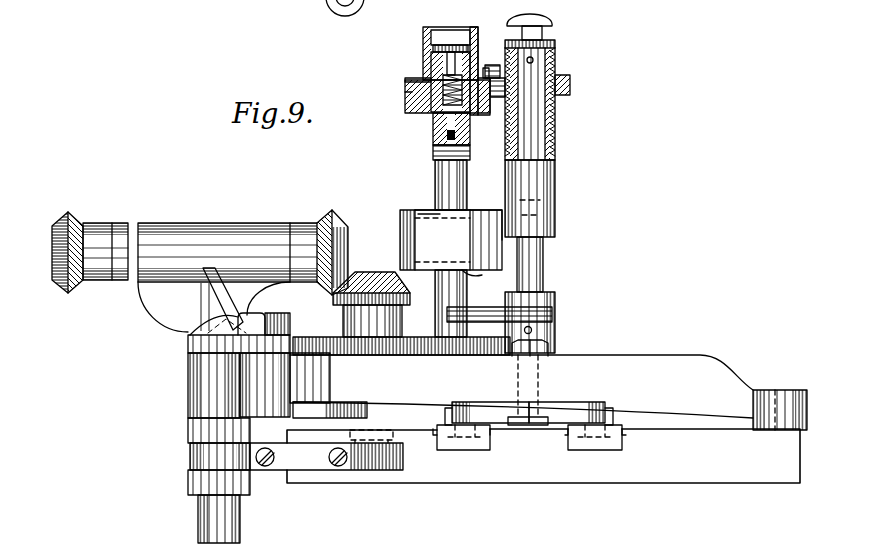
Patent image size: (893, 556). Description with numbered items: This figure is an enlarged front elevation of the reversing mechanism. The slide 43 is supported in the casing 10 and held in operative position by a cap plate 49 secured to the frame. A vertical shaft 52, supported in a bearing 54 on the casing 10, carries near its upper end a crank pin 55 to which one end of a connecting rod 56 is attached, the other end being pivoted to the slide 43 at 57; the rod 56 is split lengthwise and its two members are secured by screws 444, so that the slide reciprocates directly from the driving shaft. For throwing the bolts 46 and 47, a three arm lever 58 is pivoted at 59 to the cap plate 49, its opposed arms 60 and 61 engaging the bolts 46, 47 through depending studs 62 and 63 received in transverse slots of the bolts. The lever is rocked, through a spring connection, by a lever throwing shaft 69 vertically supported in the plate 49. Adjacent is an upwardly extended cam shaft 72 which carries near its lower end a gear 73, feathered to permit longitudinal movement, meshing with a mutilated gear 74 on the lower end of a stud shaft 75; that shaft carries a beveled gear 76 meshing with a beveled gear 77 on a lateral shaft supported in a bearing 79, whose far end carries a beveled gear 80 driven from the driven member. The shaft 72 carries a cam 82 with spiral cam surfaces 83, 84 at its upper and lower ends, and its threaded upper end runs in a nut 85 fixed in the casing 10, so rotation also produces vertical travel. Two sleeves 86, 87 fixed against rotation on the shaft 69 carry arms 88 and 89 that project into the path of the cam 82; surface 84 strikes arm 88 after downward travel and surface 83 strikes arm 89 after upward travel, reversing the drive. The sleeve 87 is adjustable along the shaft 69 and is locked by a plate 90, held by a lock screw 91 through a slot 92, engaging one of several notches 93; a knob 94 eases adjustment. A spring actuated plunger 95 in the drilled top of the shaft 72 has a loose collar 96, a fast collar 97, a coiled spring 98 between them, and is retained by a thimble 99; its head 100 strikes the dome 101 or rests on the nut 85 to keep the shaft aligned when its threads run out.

The casing 10 is at (571, 87).
The slide 43 is at (431, 472).
The bolt 46 is at (466, 441).
The bolt 47 is at (600, 441).
The cap plate 49 is at (688, 363).
The vertical shaft 52 is at (206, 515).
The bearing 54 is at (190, 386).
The crank pin 55 is at (206, 455).
The connecting rod 56 is at (276, 470).
The pivot 57 is at (379, 431).
The three arm lever 58 is at (530, 420).
The pivot 59 is at (550, 346).
The lever arm 60 is at (488, 408).
The lever arm 61 is at (580, 408).
The depending stud 62 is at (452, 420).
The depending stud 63 is at (606, 422).
The lever throwing shaft 69 is at (541, 265).
The cam shaft 72 is at (445, 172).
The gear 73 is at (478, 342).
The mutilated gear 74 is at (352, 348).
The stud shaft 75 is at (342, 322).
The beveled gear 76 is at (376, 278).
The beveled gear 77 is at (338, 227).
The bearing 79 is at (235, 245).
The beveled gear 80 is at (57, 226).
The cam 82 is at (412, 229).
The spiral cam surface 83 is at (418, 214).
The spiral cam surface 84 is at (472, 273).
The nut 85 is at (476, 113).
The lower sleeve 86 is at (549, 330).
The upper sleeve 87 is at (542, 207).
The arm 88 is at (483, 315).
The arm 89 is at (480, 212).
The plate 90 is at (496, 98).
The lock screw 91 is at (497, 63).
The slot 92 is at (485, 67).
The notches 93 is at (558, 130).
The knob 94 is at (541, 17).
The spring actuated plunger 95 is at (436, 126).
The collar 96 is at (412, 111).
The collar 97 is at (436, 72).
The coiled spring 98 is at (411, 81).
The thimble 99 is at (428, 50).
The plunger head 100 is at (458, 45).
The dome 101 is at (441, 30).
The screws 444 is at (329, 457).